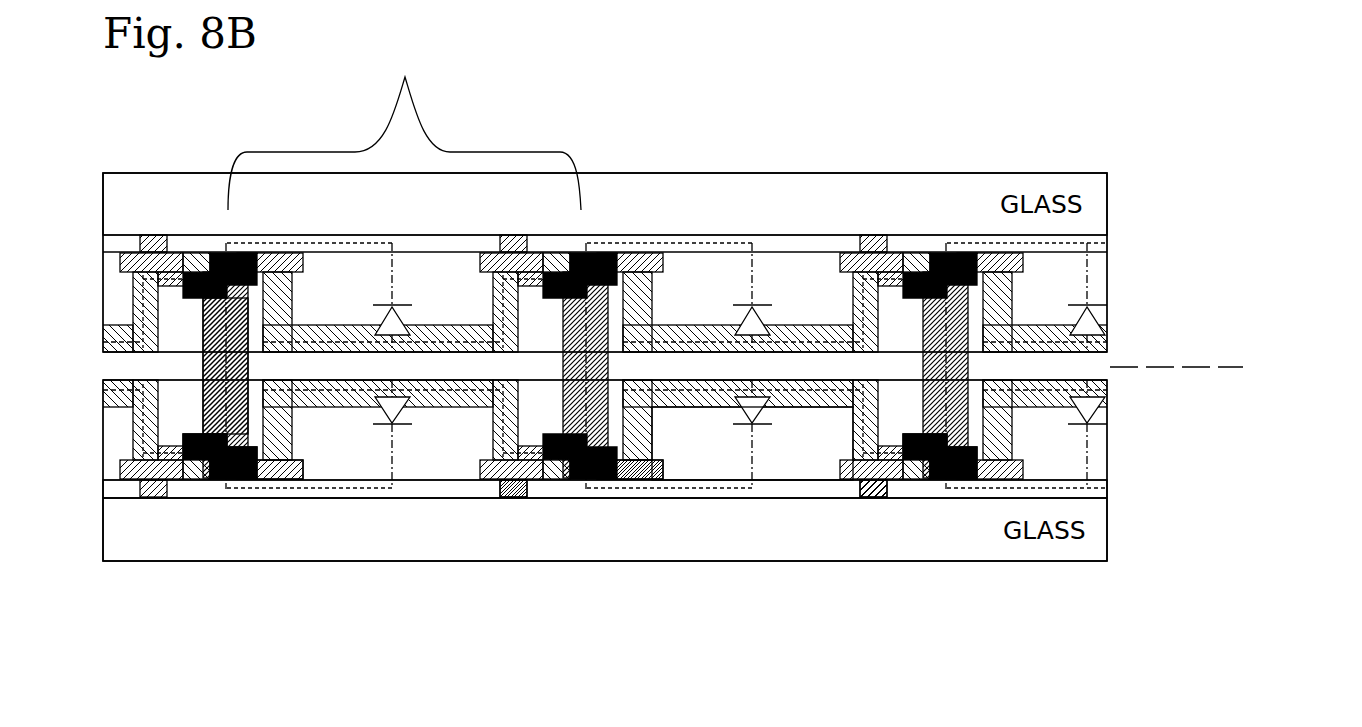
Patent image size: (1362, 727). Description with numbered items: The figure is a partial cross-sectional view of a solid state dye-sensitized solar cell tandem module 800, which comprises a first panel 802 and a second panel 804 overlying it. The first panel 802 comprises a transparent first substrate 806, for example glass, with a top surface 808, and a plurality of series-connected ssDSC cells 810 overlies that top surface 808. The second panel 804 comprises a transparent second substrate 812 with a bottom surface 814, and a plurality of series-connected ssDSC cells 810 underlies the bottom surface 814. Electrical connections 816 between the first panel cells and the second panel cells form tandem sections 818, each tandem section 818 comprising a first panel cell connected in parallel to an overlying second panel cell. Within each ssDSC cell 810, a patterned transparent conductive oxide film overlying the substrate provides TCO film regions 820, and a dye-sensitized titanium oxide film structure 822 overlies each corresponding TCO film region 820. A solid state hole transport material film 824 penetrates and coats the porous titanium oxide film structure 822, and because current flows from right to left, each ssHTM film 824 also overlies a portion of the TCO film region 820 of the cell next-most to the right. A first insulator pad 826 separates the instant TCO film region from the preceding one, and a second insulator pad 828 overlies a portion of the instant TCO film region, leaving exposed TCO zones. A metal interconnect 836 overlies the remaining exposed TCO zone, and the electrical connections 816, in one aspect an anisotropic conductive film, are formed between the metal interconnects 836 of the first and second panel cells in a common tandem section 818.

The tandem module 800 is at (246, 609).
The first panel 802 is at (1192, 387).
The second panel 804 is at (1192, 345).
The first substrate 806 is at (413, 538).
The top surface 808 is at (730, 517).
The ssDSC cell 810 is at (1114, 403).
The second substrate 812 is at (413, 215).
The bottom surface 814 is at (628, 218).
The electrical connection 816 is at (215, 350).
The tandem section 818 is at (405, 77).
The TCO film region 820 is at (990, 498).
The dye-sensitized titanium oxide film structure 822 is at (813, 468).
The ssHTM film 824 is at (922, 468).
The first insulator pad 826 is at (512, 480).
The second insulator pad 828 is at (278, 472).
The metal interconnect 836 is at (218, 482).